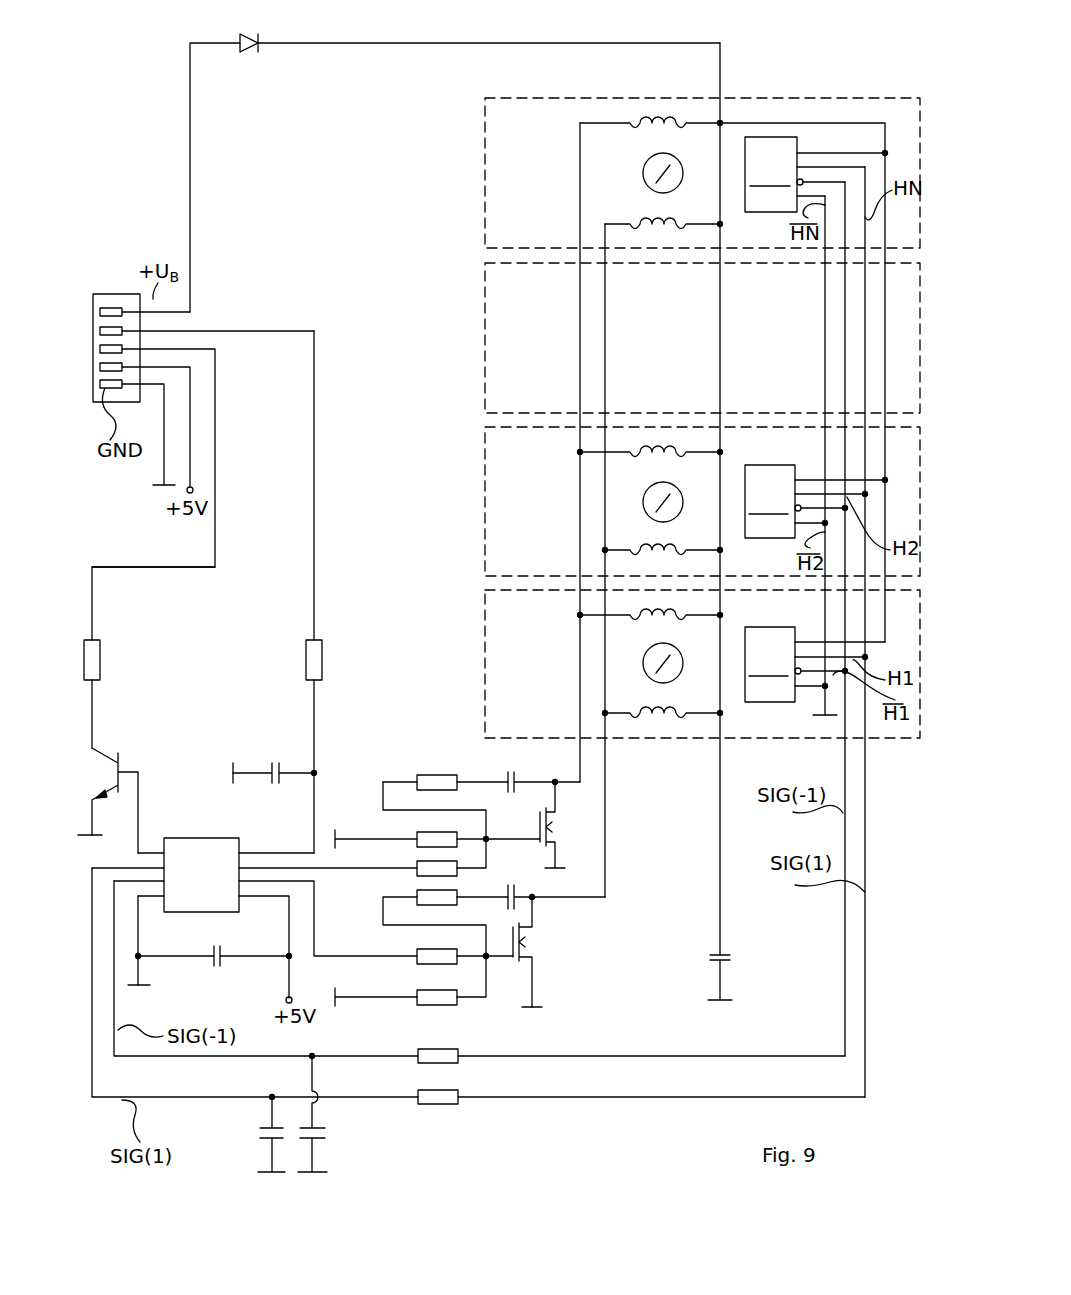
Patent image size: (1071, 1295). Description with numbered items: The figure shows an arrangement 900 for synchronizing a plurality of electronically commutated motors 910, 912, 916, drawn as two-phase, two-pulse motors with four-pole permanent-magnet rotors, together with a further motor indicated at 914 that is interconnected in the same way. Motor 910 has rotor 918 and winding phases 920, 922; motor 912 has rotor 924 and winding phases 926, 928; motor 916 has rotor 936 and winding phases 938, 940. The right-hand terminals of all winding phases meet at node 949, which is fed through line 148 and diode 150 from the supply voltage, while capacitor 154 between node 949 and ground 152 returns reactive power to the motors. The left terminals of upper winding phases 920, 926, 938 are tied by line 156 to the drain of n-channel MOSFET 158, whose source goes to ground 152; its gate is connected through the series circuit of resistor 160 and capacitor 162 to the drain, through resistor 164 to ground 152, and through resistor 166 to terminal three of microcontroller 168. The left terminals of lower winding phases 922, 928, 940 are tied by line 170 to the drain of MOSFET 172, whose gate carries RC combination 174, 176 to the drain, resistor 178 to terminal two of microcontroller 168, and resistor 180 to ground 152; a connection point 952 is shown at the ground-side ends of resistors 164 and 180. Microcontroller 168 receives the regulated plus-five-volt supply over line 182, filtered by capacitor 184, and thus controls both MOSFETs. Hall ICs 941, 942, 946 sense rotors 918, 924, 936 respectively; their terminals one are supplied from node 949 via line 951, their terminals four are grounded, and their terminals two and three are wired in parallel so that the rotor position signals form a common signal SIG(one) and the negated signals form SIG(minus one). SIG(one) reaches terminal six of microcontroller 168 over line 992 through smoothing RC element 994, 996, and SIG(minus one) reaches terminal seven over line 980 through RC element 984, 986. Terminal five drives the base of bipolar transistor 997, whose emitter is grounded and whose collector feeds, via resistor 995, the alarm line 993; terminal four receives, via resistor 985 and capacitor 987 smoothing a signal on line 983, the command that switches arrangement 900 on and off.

The arrangement 900 is at (142, 43).
The line 148 is at (520, 43).
The diode 150 is at (250, 50).
The ground 152 is at (163, 478).
The capacitor 154 is at (732, 957).
The line 156 is at (580, 190).
The n-channel MOSFET 158 is at (540, 820).
The resistor 160 is at (417, 772).
The capacitor 162 is at (508, 775).
The resistor 164 is at (417, 828).
The resistor 166 is at (417, 862).
The microcontroller 168 is at (195, 838).
The line 170 is at (606, 848).
The n-channel MOSFET 172 is at (513, 928).
The resistor 174 is at (417, 893).
The capacitor 176 is at (540, 900).
The resistor 178 is at (417, 946).
The resistor 180 is at (417, 1000).
The line 182 is at (190, 448).
The filter capacitor 184 is at (213, 953).
The electronically commutated motor 910 is at (485, 670).
The electronically commutated motor 912 is at (485, 507).
The other motor 914 is at (485, 345).
The electronically commutated motor 916 is at (485, 183).
The four-pole permanent-magnet rotor 918 is at (682, 678).
The winding phase 920 is at (667, 622).
The winding phase 922 is at (665, 722).
The rotor 924 is at (682, 517).
The winding phase 926 is at (667, 460).
The winding phase 928 is at (668, 560).
The rotor 936 is at (680, 188).
The winding phase 938 is at (665, 132).
The winding phase 940 is at (665, 235).
The Hall IC 941 is at (815, 664).
The Hall IC 942 is at (816, 501).
The Hall IC 946 is at (816, 174).
The node 949 is at (722, 123).
The line 951 is at (812, 123).
The terminal 952 is at (336, 830).
The line 980 is at (582, 1058).
The line 983 is at (315, 432).
The resistor 984 is at (440, 1062).
The resistor 985 is at (306, 660).
The capacitor 986 is at (312, 1125).
The capacitor 987 is at (284, 770).
The line 992 is at (582, 1099).
The line 993 is at (165, 568).
The resistor 994 is at (440, 1103).
The resistor 995 is at (100, 660).
The capacitor 996 is at (262, 1125).
The bipolar transistor 997 is at (128, 748).